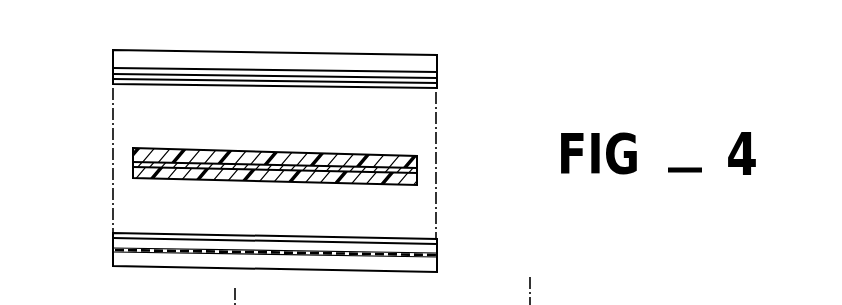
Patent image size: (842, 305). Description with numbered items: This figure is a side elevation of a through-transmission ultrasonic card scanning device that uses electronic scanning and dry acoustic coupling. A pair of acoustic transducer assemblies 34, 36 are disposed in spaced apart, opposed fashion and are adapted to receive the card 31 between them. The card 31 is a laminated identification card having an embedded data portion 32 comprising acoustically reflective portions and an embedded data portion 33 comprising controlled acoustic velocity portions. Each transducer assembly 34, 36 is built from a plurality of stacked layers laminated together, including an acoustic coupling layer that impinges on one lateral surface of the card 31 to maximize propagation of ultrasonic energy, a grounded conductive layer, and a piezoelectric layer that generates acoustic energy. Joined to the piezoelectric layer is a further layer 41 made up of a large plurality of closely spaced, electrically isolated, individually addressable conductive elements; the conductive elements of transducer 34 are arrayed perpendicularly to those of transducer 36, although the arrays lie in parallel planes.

The card 31 is at (314, 144).
The embedded data portion 32 is at (228, 166).
The embedded data portion 33 is at (385, 157).
The acoustic transducer assembly 34 is at (267, 250).
The acoustic transducer assembly 36 is at (128, 62).
The layer 41 is at (113, 250).